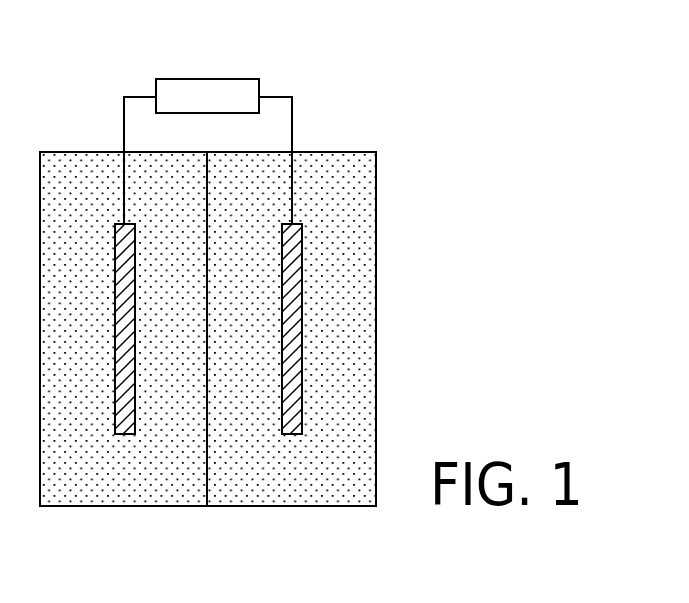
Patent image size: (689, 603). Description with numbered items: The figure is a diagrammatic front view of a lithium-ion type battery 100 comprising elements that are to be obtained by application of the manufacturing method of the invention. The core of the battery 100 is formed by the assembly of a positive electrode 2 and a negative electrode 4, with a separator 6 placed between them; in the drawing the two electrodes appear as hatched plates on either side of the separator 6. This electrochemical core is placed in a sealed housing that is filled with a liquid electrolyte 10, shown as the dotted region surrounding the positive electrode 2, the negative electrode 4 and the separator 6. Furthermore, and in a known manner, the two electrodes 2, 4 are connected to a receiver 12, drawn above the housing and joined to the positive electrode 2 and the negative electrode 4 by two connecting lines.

The positive electrode 2 is at (125, 434).
The negative electrode 4 is at (292, 434).
The separator 6 is at (207, 428).
The liquid electrolyte 10 is at (361, 199).
The receiver 12 is at (224, 83).
The lithium-ion type battery 100 is at (390, 112).